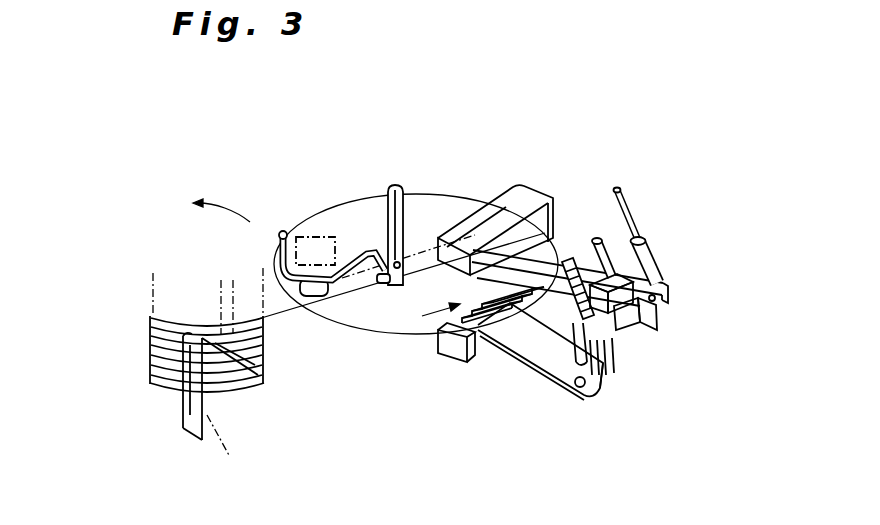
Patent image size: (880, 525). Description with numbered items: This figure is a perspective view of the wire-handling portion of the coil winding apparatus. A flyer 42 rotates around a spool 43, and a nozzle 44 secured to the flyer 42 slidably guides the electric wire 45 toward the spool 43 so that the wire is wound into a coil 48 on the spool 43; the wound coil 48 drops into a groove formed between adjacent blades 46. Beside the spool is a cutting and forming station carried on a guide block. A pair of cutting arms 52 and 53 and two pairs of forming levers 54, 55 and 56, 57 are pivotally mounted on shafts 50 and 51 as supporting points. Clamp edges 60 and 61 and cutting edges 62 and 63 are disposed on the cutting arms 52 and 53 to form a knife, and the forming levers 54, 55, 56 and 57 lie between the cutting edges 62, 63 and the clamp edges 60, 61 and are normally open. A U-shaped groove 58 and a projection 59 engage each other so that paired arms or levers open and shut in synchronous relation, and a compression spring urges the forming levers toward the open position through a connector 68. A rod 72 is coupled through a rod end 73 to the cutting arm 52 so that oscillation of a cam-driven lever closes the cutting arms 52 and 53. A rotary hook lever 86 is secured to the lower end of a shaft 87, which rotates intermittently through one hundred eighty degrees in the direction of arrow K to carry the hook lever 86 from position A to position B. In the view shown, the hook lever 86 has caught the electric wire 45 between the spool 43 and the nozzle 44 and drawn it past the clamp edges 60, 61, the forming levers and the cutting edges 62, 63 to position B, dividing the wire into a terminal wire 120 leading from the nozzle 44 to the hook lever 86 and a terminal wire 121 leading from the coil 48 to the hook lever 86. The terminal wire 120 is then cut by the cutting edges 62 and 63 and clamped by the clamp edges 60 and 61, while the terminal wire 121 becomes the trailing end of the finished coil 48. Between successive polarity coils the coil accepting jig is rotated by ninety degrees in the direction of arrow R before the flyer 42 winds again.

The flyer 42 is at (286, 218).
The spool 43 is at (208, 284).
The nozzle 44 is at (307, 339).
The electric wire 45 is at (213, 313).
The blades 46 is at (230, 450).
The coil 48 is at (243, 397).
The shaft 50 is at (570, 191).
The shaft 51 is at (555, 403).
The cutting arm 52 is at (666, 307).
The cutting arm 53 is at (675, 350).
The forming lever 54 is at (572, 239).
The forming lever 55 is at (532, 402).
The forming lever 56 is at (614, 195).
The forming lever 57 is at (646, 393).
The U-shaped groove 58 is at (587, 423).
The projection 59 is at (623, 416).
The clamp edge 60 is at (495, 194).
The clamp edge 61 is at (480, 373).
The cutting edge 62 is at (509, 184).
The cutting edge 63 is at (454, 180).
The connector 68 is at (675, 334).
The rod 72 is at (652, 191).
The rod end 73 is at (681, 237).
The hook lever 86 is at (332, 209).
The shaft 87 is at (374, 199).
The terminal wire 120 is at (463, 355).
The terminal wire 121 is at (361, 355).
The position A is at (226, 191).
The position B is at (496, 138).
The arrow K is at (417, 343).
The arrow R is at (209, 206).